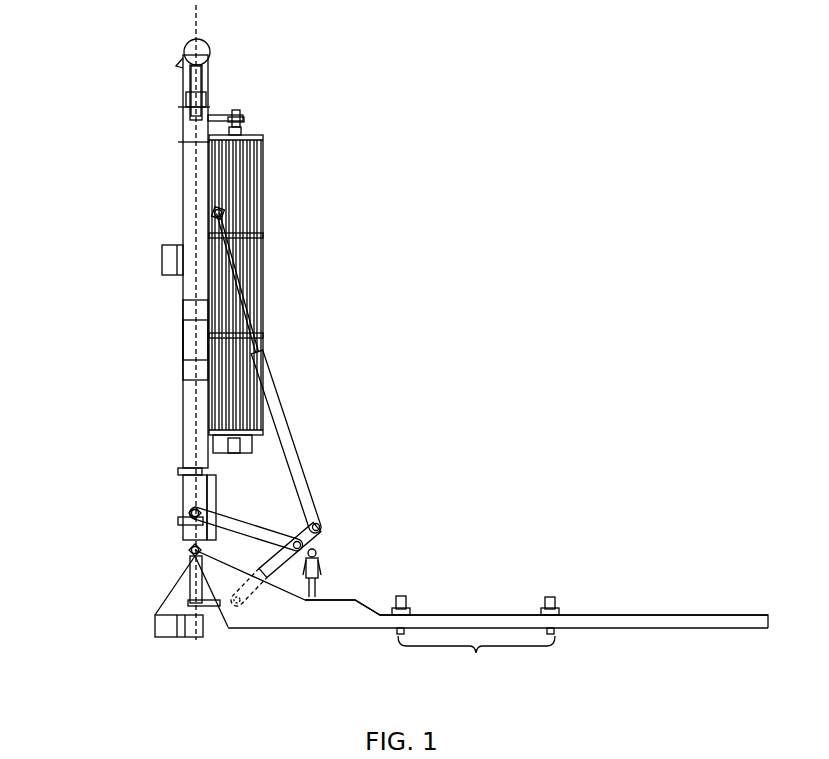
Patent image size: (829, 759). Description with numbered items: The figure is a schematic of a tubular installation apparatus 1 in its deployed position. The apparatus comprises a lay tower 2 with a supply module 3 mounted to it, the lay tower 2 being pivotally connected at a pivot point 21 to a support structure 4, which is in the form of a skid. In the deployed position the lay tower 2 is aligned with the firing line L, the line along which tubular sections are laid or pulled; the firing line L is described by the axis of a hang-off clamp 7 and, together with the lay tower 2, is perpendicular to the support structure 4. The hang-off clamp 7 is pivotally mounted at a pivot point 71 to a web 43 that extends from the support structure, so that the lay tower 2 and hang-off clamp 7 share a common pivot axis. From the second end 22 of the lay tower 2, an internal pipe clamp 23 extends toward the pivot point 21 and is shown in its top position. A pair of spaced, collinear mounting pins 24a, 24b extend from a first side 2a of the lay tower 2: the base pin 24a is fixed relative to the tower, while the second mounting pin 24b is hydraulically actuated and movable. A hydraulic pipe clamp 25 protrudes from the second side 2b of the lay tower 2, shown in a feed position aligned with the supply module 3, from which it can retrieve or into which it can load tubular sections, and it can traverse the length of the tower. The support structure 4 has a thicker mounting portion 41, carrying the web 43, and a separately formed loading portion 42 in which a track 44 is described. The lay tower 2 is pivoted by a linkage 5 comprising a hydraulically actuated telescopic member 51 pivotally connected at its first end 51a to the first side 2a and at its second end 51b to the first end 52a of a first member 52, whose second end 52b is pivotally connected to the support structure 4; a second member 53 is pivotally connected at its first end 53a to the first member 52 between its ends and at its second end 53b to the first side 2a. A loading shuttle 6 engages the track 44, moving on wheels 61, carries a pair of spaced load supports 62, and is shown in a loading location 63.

The tubular installation apparatus 1 is at (627, 156).
The lay tower 2 is at (175, 370).
The first side of the lay tower 2a is at (210, 362).
The second side of the lay tower 2b is at (183, 332).
The supply module 3 is at (320, 242).
The support structure 4 is at (695, 602).
The linkage 5 is at (392, 436).
The loading shuttle 6 is at (498, 542).
The hang-off clamp 7 is at (150, 619).
The firing line L is at (190, 162).
The pivot point 21 is at (179, 534).
The pivot point 71 is at (195, 550).
The second end of the lay tower 22 is at (210, 52).
The internal pipe clamp 23 is at (200, 88).
The first mounting pin 24a is at (212, 457).
The second mounting pin 24b is at (243, 118).
The pipe clamp 25 is at (161, 262).
The mounting portion 41 is at (347, 617).
The loading portion 42 is at (712, 630).
The web 43 is at (222, 586).
The track 44 is at (618, 615).
The telescopic member 51 is at (310, 483).
The first end of the telescopic member 51a is at (222, 210).
The second end of the telescopic member 51b is at (393, 551).
The first member 52 is at (290, 556).
The first end of the first member 52a is at (322, 530).
The second end of the first member 52b is at (240, 607).
The second member 53 is at (263, 533).
The first end of the second member 53a is at (272, 546).
The second end of the second member 53b is at (193, 513).
The wheels 61 is at (551, 630).
The load supports 62 is at (552, 596).
The loading location 63 is at (476, 664).